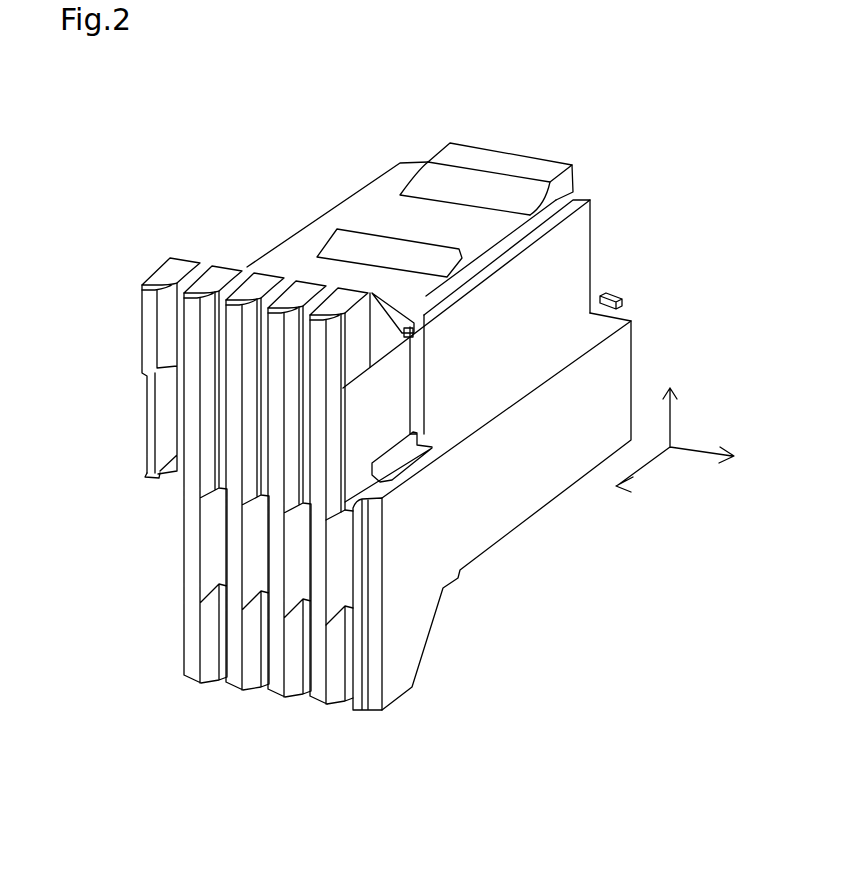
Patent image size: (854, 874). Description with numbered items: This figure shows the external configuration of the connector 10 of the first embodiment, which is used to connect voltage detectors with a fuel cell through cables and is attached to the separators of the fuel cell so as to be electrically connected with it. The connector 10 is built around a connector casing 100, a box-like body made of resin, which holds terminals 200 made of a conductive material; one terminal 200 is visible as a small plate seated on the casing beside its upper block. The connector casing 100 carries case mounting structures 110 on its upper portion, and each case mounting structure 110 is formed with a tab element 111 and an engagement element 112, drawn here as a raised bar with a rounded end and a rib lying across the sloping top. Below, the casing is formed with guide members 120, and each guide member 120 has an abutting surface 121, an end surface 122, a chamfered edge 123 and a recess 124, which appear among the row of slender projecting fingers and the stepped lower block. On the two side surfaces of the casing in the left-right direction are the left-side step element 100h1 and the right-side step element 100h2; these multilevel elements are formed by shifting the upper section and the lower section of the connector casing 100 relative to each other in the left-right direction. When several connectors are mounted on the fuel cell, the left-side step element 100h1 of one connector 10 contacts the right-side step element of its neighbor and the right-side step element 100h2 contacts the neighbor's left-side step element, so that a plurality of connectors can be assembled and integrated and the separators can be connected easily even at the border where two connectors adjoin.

The connector 10 is at (643, 112).
The connector casing 100 is at (592, 257).
The left-side step element 100h1 is at (497, 405).
The right-side step element 100h2 is at (155, 480).
The case mounting structure 110 is at (443, 215).
The tab element 111 is at (499, 160).
The engagement element 112 is at (391, 247).
The guide member 120 is at (412, 633).
The abutting surface 121 is at (349, 697).
The end surface 122 is at (316, 700).
The chamfered edge 123 is at (338, 700).
The recess 124 is at (207, 557).
The terminal 200 is at (622, 296).